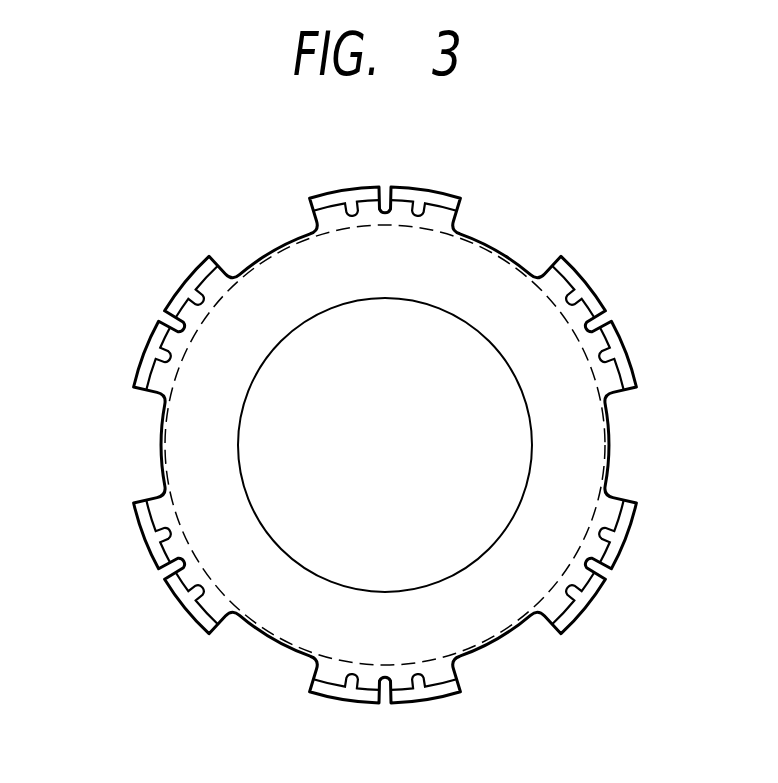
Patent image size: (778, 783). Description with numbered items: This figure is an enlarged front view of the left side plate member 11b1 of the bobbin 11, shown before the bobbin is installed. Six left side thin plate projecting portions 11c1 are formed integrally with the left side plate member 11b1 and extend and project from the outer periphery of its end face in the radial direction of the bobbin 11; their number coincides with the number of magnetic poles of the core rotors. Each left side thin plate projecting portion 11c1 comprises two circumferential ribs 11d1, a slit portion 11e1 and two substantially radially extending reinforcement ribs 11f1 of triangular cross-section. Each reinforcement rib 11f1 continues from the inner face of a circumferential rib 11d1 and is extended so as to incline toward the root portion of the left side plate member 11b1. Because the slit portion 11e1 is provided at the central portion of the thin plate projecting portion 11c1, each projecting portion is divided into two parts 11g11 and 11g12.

The bobbin 11 is at (264, 274).
The left side plate member 11b1 is at (166, 458).
The left side thin plate projecting portion 11c1 is at (305, 217).
The circumferential rib 11d1 is at (450, 201).
The slit portion 11e1 is at (388, 193).
The reinforcement rib 11f1 is at (352, 203).
The first divided part of the thin plate projecting portion 11g11 is at (323, 223).
The second divided part of the thin plate projecting portion 11g12 is at (443, 222).